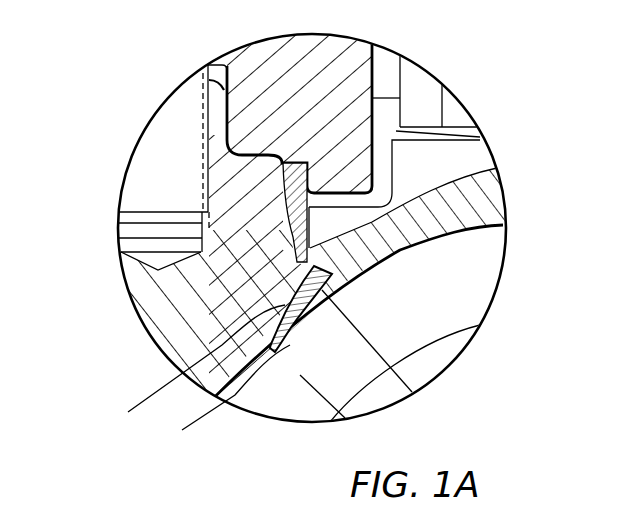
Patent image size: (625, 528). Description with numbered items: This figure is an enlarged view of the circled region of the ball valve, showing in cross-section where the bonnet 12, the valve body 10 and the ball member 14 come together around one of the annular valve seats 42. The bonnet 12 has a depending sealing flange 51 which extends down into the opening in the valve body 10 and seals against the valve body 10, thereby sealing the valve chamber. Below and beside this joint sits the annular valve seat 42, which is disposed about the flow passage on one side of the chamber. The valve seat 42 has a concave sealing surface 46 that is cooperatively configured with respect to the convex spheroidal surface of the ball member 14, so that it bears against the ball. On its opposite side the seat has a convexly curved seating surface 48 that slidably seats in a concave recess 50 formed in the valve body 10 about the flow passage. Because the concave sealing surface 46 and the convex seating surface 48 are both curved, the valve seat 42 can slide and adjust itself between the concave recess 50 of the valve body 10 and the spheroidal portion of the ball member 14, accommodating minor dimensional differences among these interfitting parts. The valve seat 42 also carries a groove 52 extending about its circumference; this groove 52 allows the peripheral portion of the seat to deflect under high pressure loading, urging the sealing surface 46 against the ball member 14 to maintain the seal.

The valve body 10 is at (152, 290).
The bonnet 12 is at (255, 104).
The ball member 14 is at (425, 164).
The annular valve seat 42 is at (300, 387).
The concave sealing surface 46 is at (324, 283).
The convex seating surface 48 is at (166, 371).
The concave recess 50 is at (166, 371).
The depending sealing flange 51 is at (296, 226).
The groove 52 is at (236, 358).